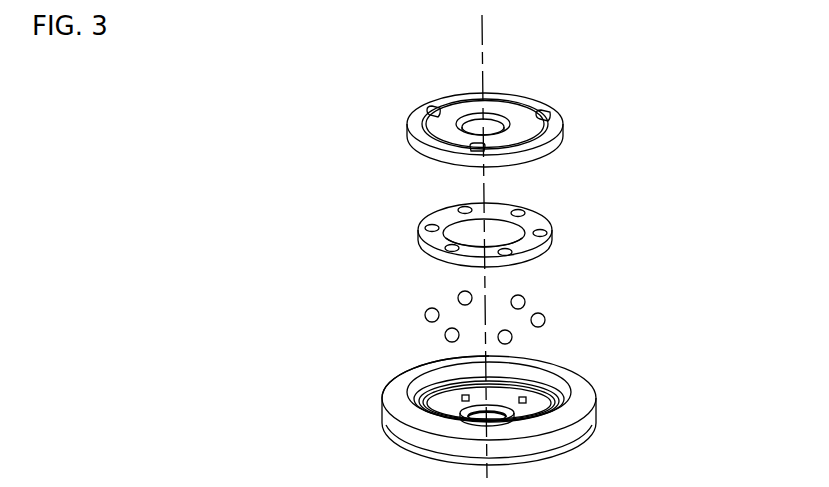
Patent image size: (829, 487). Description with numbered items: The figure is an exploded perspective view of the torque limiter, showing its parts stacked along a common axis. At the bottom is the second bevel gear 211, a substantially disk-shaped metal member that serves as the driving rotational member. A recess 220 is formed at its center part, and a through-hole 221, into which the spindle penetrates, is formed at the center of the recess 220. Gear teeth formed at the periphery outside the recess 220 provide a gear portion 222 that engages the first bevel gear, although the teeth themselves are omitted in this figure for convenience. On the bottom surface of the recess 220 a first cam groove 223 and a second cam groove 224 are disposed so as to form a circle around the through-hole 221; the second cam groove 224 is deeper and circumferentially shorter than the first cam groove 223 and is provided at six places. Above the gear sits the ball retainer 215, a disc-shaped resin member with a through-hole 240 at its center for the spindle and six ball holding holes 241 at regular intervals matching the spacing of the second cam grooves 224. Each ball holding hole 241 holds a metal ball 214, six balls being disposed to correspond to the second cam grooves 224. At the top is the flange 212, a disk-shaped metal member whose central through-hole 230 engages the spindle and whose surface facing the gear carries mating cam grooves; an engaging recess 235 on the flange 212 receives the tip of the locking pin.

The second bevel gear 211 is at (588, 427).
The flange 212 is at (556, 140).
The ball 214 is at (543, 318).
The ball retainer 215 is at (532, 217).
The recess 220 is at (525, 366).
The through-hole 221 is at (462, 416).
The gear portion 222 is at (398, 405).
The first cam groove 223 is at (437, 393).
The second cam groove 224 is at (520, 402).
The through-hole 230 is at (489, 120).
The engaging recess 235 is at (544, 113).
The through-hole 240 is at (461, 230).
The ball holding hole 241 is at (541, 233).